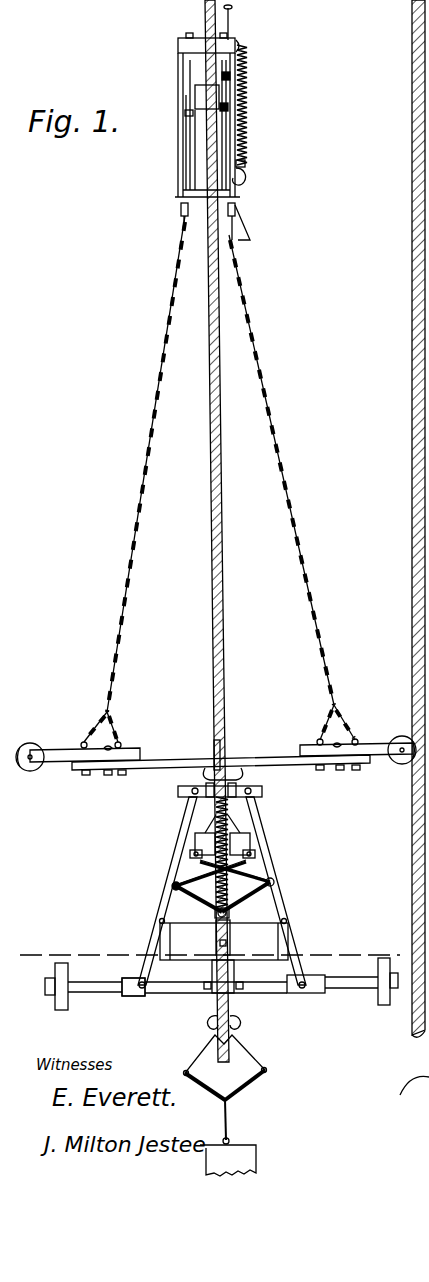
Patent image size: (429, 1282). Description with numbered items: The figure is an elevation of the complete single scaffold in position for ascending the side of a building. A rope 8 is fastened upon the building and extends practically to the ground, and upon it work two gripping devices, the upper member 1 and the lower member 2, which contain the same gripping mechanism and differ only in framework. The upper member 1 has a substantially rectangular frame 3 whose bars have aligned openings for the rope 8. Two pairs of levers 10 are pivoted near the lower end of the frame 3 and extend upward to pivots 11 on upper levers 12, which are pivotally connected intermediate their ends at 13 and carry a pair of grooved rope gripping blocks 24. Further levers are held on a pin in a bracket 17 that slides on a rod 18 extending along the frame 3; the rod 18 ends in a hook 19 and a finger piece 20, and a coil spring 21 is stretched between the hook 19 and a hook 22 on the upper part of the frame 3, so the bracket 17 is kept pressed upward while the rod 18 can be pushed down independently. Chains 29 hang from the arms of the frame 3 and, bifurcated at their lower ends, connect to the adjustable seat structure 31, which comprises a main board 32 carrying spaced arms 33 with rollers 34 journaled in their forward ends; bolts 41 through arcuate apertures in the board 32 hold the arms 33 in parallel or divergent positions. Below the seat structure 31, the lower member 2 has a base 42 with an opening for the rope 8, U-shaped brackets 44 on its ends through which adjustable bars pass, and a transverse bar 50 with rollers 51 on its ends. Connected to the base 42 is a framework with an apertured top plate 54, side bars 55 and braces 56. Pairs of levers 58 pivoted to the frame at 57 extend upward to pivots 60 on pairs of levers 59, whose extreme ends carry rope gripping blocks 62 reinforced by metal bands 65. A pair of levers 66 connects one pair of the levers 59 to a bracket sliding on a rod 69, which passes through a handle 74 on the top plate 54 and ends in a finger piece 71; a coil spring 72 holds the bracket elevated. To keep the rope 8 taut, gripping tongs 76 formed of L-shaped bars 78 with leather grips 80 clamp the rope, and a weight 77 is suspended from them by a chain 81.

The upper gripping device 1 is at (254, 112).
The lower gripping device 2 is at (303, 880).
The rectangular frame 3 is at (248, 152).
The rope 8 is at (207, 412).
The levers 10 is at (186, 160).
The pivot 11 is at (186, 140).
The upper levers 12 is at (188, 118).
The pivot 13 is at (383, 937).
The bracket 17 is at (230, 76).
The rod 18 is at (230, 26).
The hook 19 is at (245, 163).
The finger piece 20 is at (250, 180).
The coil spring 21 is at (247, 135).
The hook 22 is at (243, 45).
The rope gripping blocks 24 is at (200, 92).
The chains 29 is at (160, 379).
The seat structure 31 is at (260, 748).
The main board 32 is at (178, 760).
The arms 33 is at (60, 752).
The rollers 34 is at (34, 743).
The bolts 41 is at (122, 742).
The base 42 is at (176, 984).
The U-shaped brackets 44 is at (130, 996).
The transverse bar 50 is at (181, 209).
The rollers 51 is at (62, 1010).
The top plate 54 is at (180, 791).
The side bars 55 is at (186, 822).
The braces 56 is at (200, 926).
The pivot 57 is at (230, 916).
The levers 58 is at (200, 897).
The levers 59 is at (195, 875).
The pivot 60 is at (176, 886).
The rope gripping blocks 62 is at (195, 840).
The bands 65 is at (190, 854).
The levers 66 is at (208, 838).
The rod 69 is at (224, 752).
The finger piece 71 is at (230, 936).
The coil spring 72 is at (224, 888).
The handle 74 is at (252, 778).
The gripping tongs 76 is at (268, 1058).
The weight 77 is at (242, 1162).
The L-shaped bars 78 is at (208, 1062).
The grips 80 is at (212, 1020).
The chain 81 is at (230, 1118).